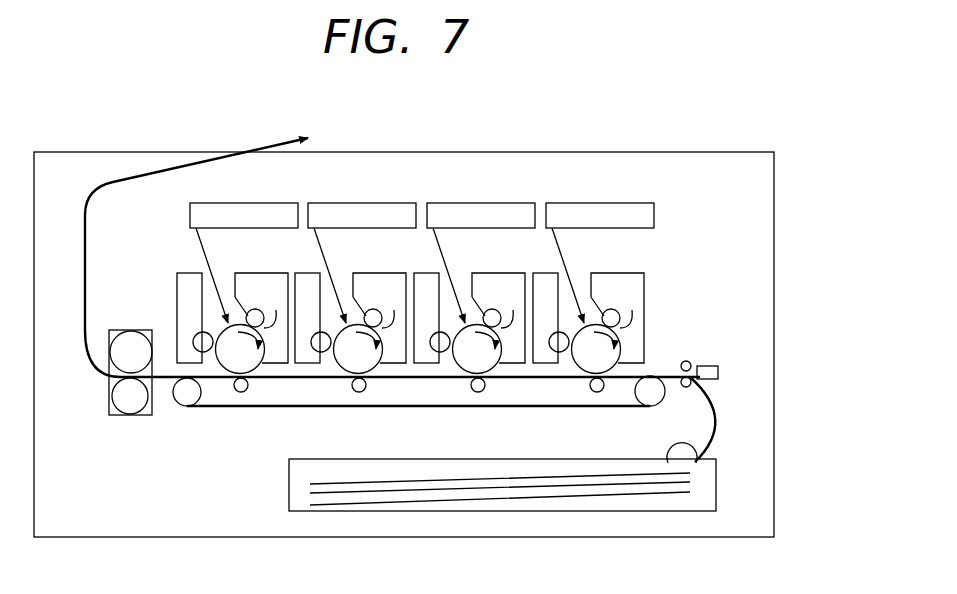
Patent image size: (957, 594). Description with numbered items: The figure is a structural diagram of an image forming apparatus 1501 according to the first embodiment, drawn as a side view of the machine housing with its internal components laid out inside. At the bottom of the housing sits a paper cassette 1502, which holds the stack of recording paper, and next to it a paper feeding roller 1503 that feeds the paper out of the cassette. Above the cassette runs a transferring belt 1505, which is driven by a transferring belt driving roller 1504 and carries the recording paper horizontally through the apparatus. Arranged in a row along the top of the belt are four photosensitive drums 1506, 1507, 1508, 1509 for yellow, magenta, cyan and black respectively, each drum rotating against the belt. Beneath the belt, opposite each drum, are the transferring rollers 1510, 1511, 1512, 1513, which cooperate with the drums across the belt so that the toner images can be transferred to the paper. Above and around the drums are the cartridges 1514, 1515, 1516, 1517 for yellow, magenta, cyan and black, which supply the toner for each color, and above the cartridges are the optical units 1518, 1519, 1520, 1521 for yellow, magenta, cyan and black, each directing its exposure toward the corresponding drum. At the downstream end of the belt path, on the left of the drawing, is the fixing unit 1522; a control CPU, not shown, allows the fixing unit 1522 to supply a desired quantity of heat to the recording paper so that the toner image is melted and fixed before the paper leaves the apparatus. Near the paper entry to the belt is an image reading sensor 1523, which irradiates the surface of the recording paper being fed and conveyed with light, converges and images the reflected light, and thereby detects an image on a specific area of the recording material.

The image forming apparatus 1501 is at (708, 152).
The paper cassette 1502 is at (407, 493).
The paper feeding roller 1503 is at (682, 465).
The transferring belt driving roller 1504 is at (688, 360).
The transferring belt 1505 is at (283, 407).
The photosensitive drum for yellow 1506 is at (582, 378).
The photosensitive drum for magenta 1507 is at (462, 378).
The photosensitive drum for cyan 1508 is at (343, 378).
The photosensitive drum for black 1509 is at (222, 378).
The transferring roller 1510 is at (597, 392).
The transferring roller 1511 is at (478, 392).
The transferring roller 1512 is at (359, 392).
The transferring roller 1513 is at (240, 392).
The cartridge for yellow 1514 is at (626, 259).
The cartridge for magenta 1515 is at (508, 259).
The cartridge for cyan 1516 is at (390, 259).
The cartridge for black 1517 is at (272, 259).
The optical unit for yellow 1518 is at (639, 203).
The optical unit for magenta 1519 is at (520, 203).
The optical unit for cyan 1520 is at (401, 203).
The optical unit for black 1521 is at (283, 203).
The fixing unit 1522 is at (131, 330).
The image reading sensor 1523 is at (715, 366).